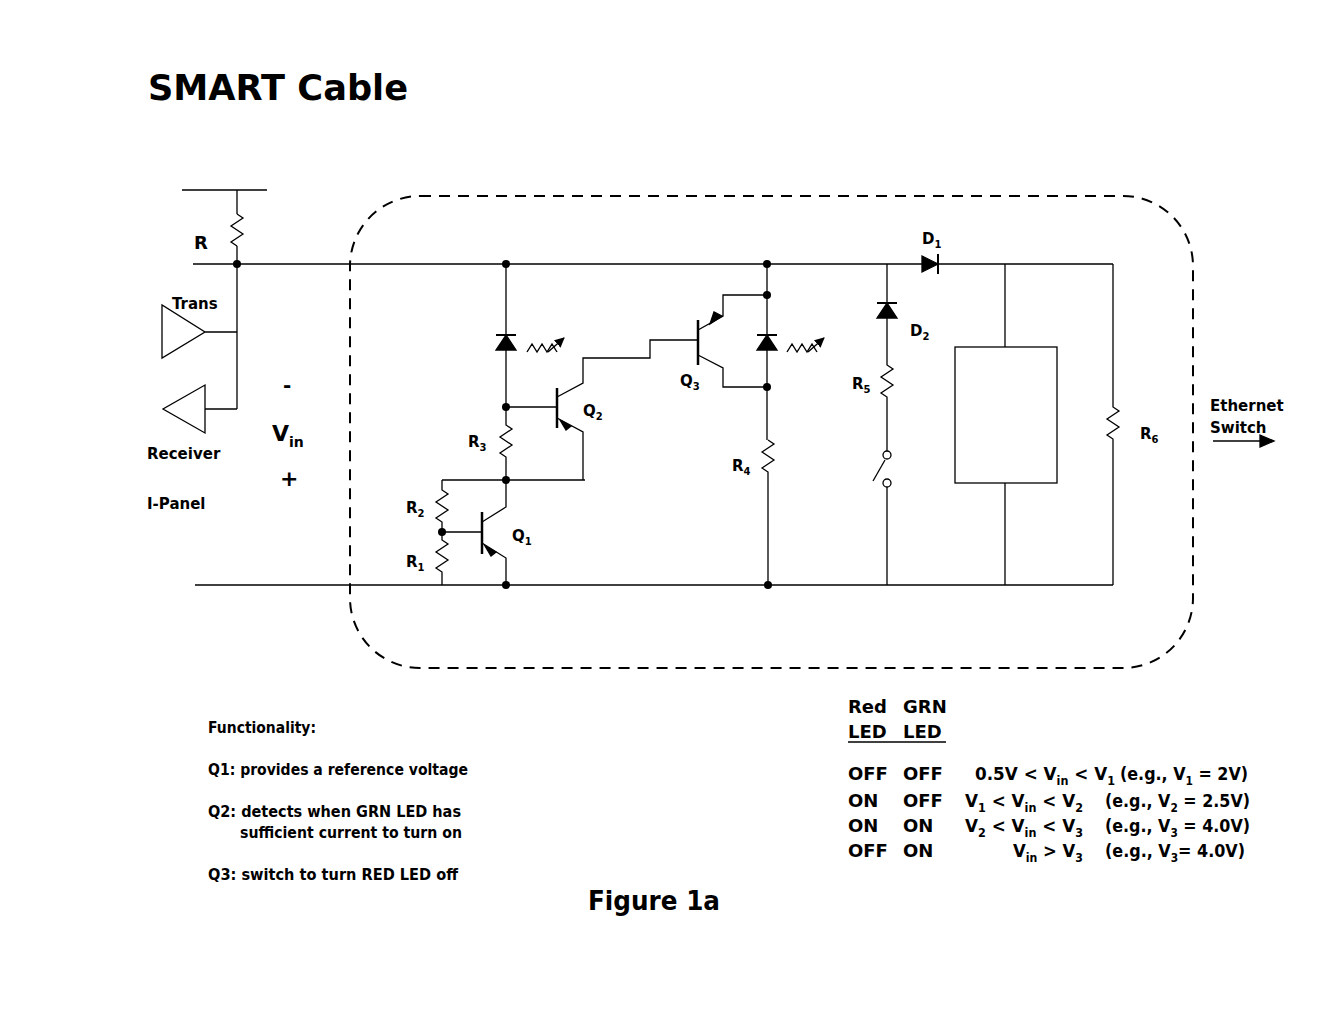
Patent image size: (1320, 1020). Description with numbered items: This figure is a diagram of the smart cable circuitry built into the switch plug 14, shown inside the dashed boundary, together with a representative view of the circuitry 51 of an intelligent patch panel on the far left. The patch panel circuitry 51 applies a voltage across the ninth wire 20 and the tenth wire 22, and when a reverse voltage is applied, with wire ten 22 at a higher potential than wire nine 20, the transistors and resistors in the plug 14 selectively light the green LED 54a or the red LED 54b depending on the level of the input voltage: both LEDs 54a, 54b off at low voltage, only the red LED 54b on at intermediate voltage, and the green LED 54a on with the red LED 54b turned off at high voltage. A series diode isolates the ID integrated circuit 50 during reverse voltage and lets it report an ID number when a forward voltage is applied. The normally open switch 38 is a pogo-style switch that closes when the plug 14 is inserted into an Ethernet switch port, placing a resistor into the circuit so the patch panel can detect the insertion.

The circuitry of an intelligent patch panel 51 is at (252, 247).
The switch plug 14 is at (772, 196).
The ninth wire 20 is at (372, 265).
The tenth wire 22 is at (375, 585).
The green LED 54a is at (500, 347).
The red LED 54b is at (770, 332).
The ID integrated circuit 50 is at (1015, 346).
The normally open switch 38 is at (895, 472).